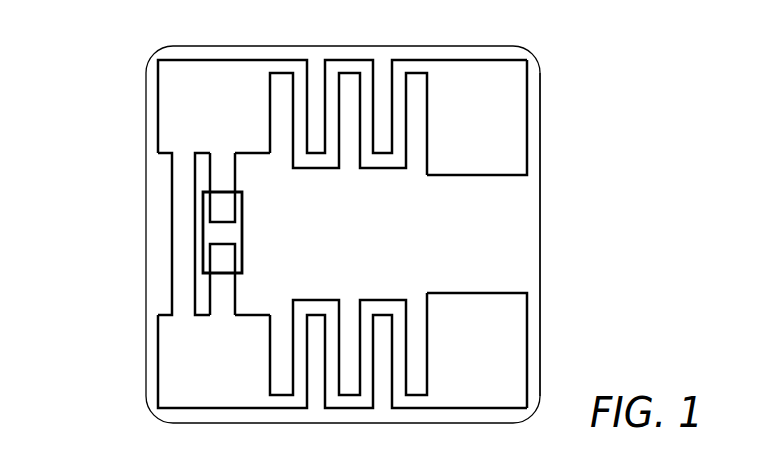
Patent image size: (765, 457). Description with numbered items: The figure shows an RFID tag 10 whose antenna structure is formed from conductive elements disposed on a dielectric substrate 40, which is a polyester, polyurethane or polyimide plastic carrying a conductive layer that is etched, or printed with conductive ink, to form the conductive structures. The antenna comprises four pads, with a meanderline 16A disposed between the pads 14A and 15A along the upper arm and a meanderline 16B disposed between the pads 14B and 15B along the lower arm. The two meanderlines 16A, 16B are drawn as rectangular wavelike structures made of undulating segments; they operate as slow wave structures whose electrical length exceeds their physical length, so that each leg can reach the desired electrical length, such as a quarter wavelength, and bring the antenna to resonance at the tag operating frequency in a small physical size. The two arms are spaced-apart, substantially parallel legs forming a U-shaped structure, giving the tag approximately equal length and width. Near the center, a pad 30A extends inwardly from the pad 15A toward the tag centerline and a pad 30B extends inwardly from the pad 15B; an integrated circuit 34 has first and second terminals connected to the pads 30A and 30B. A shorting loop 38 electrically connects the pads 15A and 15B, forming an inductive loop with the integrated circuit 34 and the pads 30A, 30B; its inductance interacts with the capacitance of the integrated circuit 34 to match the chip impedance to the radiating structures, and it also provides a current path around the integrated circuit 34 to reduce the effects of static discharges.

The tag 10 is at (110, 89).
The pad 14A is at (542, 162).
The pad 14B is at (542, 331).
The pad 15A is at (215, 60).
The pad 15B is at (158, 366).
The meanderline 16A is at (379, 169).
The meanderline 16B is at (375, 300).
The pad 30A is at (225, 219).
The pad 30B is at (225, 257).
The integrated circuit 34 is at (224, 236).
The shorting loop 38 is at (172, 232).
The dielectric substrate 40 is at (518, 238).